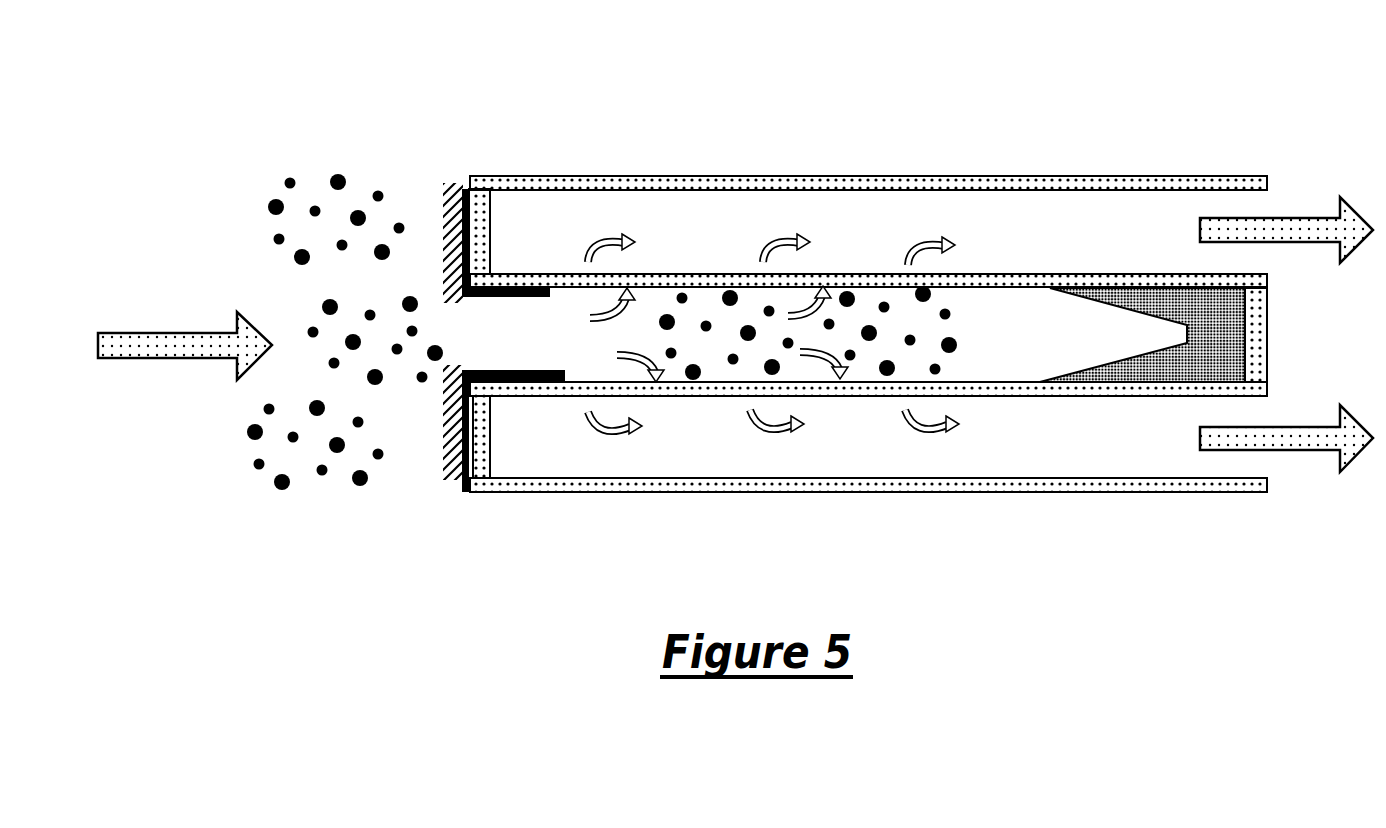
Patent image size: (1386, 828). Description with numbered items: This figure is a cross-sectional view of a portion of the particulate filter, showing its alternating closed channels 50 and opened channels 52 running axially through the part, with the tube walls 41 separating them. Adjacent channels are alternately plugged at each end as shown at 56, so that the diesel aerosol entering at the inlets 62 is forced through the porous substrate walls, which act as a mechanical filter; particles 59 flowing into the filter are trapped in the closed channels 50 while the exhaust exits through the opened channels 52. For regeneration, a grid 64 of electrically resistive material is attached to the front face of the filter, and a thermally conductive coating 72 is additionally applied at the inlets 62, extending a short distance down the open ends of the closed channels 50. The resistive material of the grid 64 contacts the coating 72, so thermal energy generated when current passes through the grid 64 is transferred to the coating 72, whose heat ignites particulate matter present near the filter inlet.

The tube walls 41 is at (720, 283).
The closed cells/channels 50 is at (1076, 317).
The opened cells/channels 52 is at (1036, 222).
The plug 56 is at (478, 185).
The particles 59 is at (1228, 323).
The inlets 62 is at (420, 318).
The grid 64 is at (452, 466).
The thermally conductive coating 72 is at (455, 186).